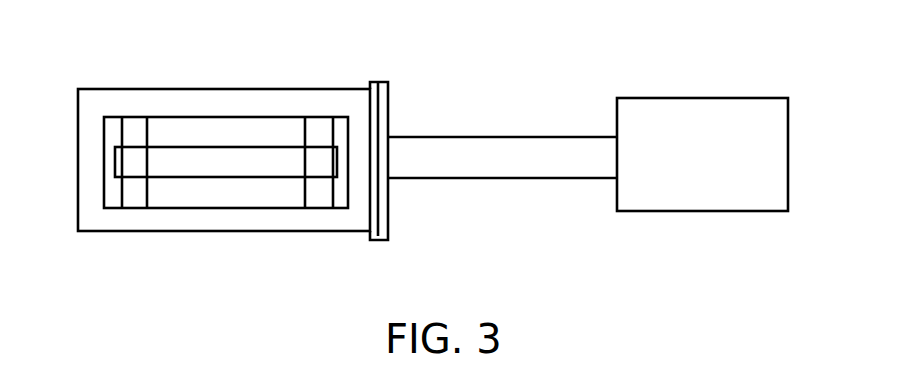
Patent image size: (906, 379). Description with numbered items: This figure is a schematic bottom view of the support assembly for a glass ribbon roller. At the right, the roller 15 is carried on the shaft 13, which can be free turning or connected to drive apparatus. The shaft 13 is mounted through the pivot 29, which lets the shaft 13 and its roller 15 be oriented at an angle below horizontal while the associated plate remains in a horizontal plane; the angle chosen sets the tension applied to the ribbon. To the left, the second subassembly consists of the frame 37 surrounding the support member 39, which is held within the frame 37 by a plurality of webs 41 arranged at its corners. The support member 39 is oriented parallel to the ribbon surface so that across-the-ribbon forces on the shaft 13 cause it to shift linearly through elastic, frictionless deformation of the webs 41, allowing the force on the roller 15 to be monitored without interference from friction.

The shaft 13 is at (542, 157).
The roller 15 is at (715, 160).
The pivot 29 is at (387, 239).
The frame 37 is at (88, 223).
The support member 39 is at (233, 163).
The web 41 is at (120, 128).